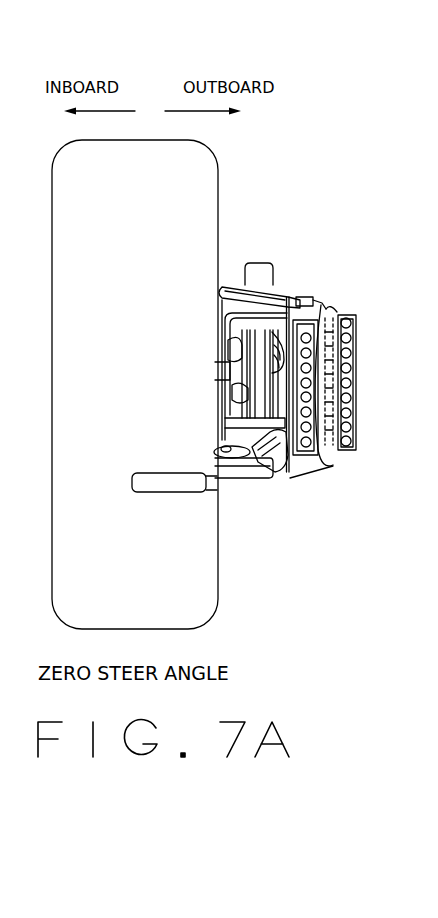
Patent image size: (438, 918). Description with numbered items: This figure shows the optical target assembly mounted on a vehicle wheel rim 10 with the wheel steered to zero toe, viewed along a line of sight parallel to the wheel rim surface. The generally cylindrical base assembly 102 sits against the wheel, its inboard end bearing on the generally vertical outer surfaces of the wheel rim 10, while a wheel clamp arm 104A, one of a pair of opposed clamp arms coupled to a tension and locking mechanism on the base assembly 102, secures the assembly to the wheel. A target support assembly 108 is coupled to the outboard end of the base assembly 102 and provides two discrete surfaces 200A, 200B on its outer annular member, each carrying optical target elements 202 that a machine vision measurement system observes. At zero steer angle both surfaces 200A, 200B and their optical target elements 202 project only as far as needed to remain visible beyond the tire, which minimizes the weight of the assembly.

The vehicle wheel rim 10 is at (236, 571).
The base assembly 102 is at (234, 285).
The wheel clamp arm 104A is at (264, 492).
The target support assembly 108 is at (314, 305).
The discrete target surface 200A is at (350, 372).
The discrete target surface 200B is at (307, 390).
The optical target elements 202 is at (346, 383).